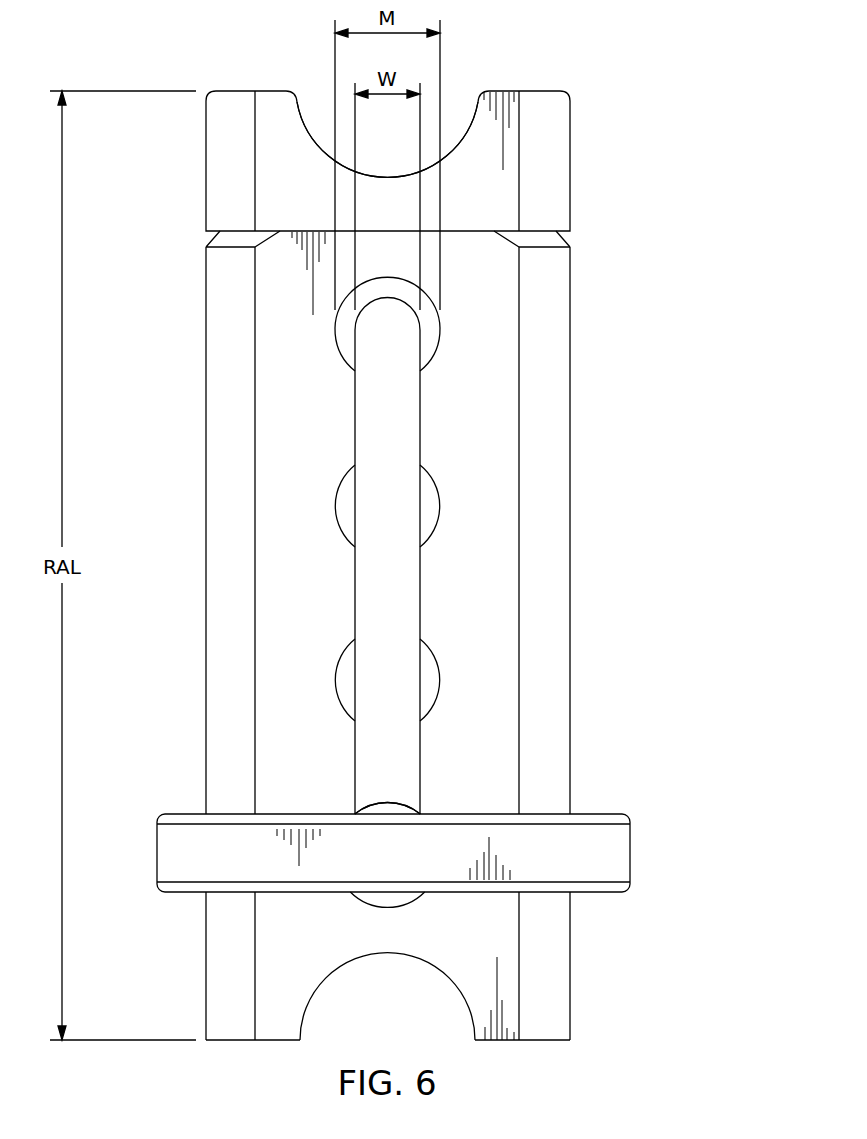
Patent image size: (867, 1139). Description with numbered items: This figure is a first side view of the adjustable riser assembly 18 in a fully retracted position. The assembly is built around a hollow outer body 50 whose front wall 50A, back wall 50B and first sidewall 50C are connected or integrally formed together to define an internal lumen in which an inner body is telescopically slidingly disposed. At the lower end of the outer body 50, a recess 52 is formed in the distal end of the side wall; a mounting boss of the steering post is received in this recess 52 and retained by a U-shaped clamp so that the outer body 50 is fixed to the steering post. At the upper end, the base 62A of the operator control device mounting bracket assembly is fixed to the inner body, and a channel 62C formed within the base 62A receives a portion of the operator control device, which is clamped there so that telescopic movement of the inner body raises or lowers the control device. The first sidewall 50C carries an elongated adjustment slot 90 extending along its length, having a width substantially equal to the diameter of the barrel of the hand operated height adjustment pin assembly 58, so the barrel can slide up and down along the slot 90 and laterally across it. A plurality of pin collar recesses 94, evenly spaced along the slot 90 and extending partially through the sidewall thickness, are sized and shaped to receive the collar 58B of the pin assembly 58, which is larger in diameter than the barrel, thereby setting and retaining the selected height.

The adjustable riser assembly 18 is at (640, 219).
The outer body 50 is at (582, 456).
The front wall 50A is at (206, 663).
The back wall 50B is at (571, 360).
The first sidewall 50C is at (560, 602).
The recess 52 is at (350, 962).
The height adjustment pin assembly 58 is at (146, 852).
The collar 58B is at (382, 802).
The base 62A is at (538, 90).
The channel 62C is at (400, 178).
The adjustment slot 90 is at (414, 437).
The pin collar recesses 94 is at (432, 327).